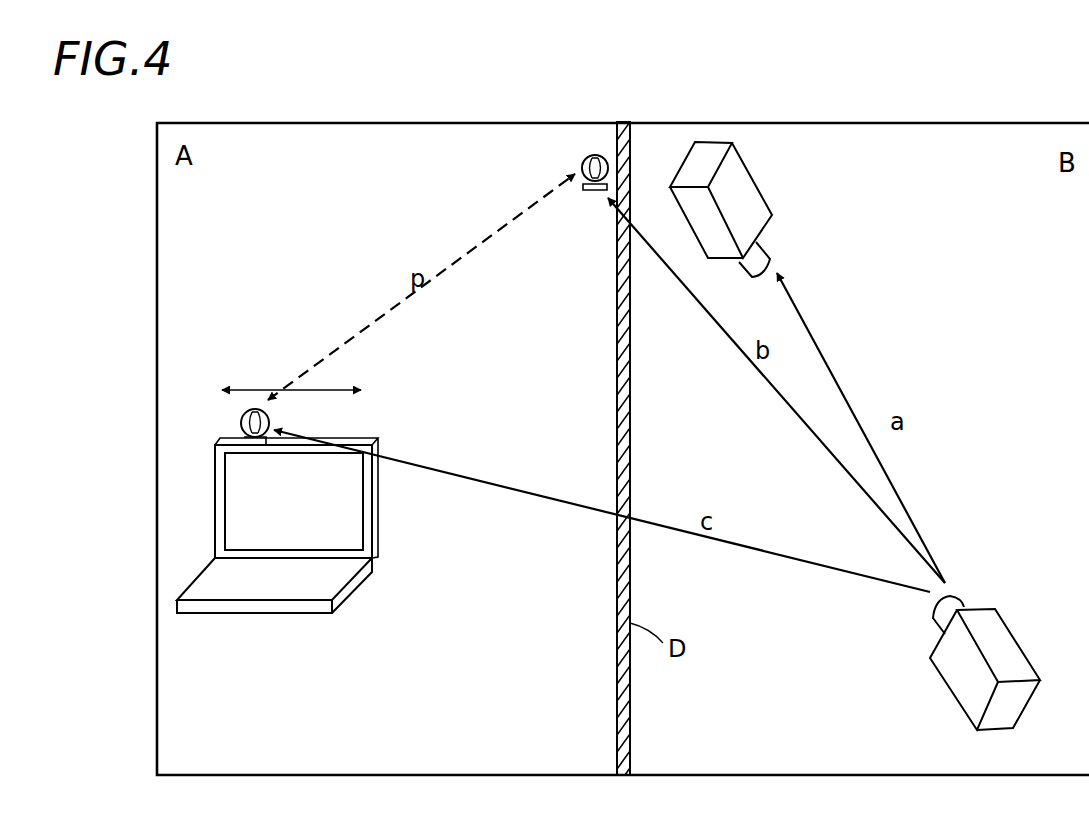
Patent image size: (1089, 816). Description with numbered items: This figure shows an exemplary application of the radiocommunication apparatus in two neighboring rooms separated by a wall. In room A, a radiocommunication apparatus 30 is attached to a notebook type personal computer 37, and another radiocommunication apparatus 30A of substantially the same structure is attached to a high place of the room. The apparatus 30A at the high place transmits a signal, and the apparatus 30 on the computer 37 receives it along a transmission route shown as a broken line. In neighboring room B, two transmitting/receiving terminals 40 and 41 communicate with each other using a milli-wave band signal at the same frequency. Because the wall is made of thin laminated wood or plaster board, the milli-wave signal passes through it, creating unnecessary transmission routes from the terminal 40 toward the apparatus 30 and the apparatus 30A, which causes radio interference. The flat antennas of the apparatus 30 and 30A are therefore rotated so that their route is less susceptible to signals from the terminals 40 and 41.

The radiocommunication apparatus 30 is at (240, 405).
The radiocommunication apparatus 30A is at (598, 192).
The computer 37 is at (370, 438).
The transmitting/receiving terminal 40 is at (1003, 620).
The transmitting/receiving terminal 41 is at (762, 190).